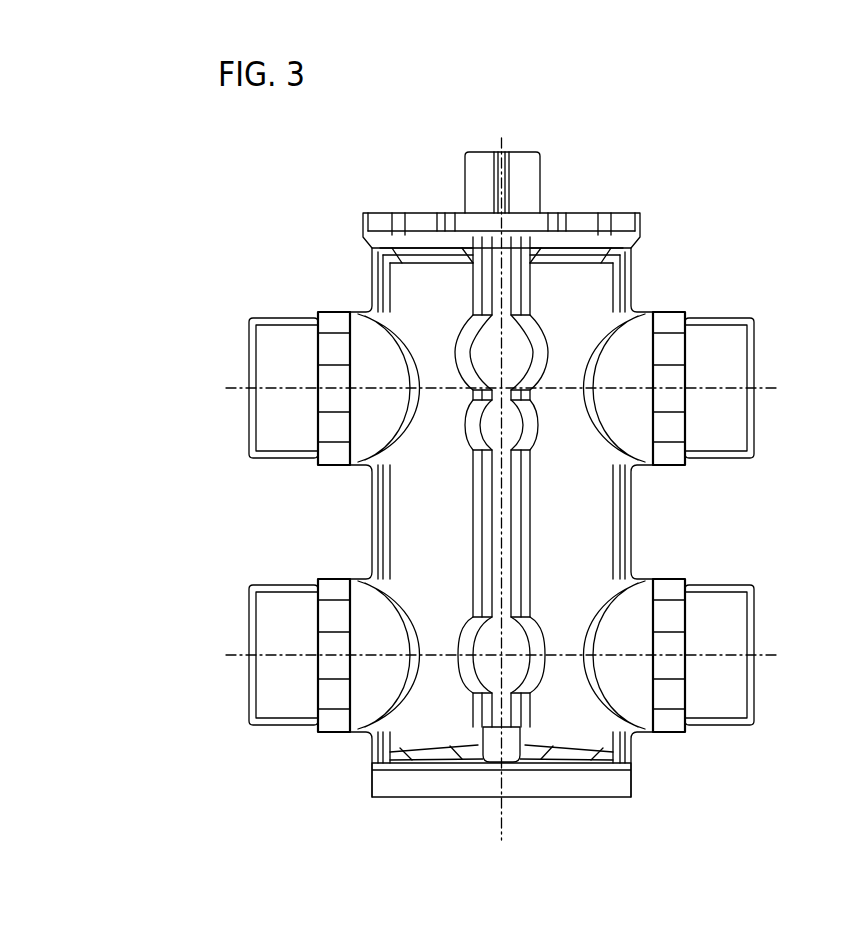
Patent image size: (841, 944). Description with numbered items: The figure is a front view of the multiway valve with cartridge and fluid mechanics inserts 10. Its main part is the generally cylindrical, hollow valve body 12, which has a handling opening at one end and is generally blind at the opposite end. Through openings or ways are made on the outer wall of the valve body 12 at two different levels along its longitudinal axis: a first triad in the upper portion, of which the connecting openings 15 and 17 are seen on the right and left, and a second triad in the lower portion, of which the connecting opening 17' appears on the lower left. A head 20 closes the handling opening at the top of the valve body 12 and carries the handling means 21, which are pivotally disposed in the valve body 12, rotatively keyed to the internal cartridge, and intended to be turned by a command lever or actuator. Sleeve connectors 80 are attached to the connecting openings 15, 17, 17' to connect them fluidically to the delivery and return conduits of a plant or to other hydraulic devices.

The multiway valve with cartridge and fluid mechanics inserts 10 is at (700, 208).
The valve body 12 is at (370, 279).
The connecting opening 15 is at (755, 381).
The connecting opening 17 is at (234, 388).
The connecting opening 17' is at (234, 655).
The head 20 is at (541, 177).
The handling means 21 is at (477, 178).
The sleeve connector 80 is at (265, 460).